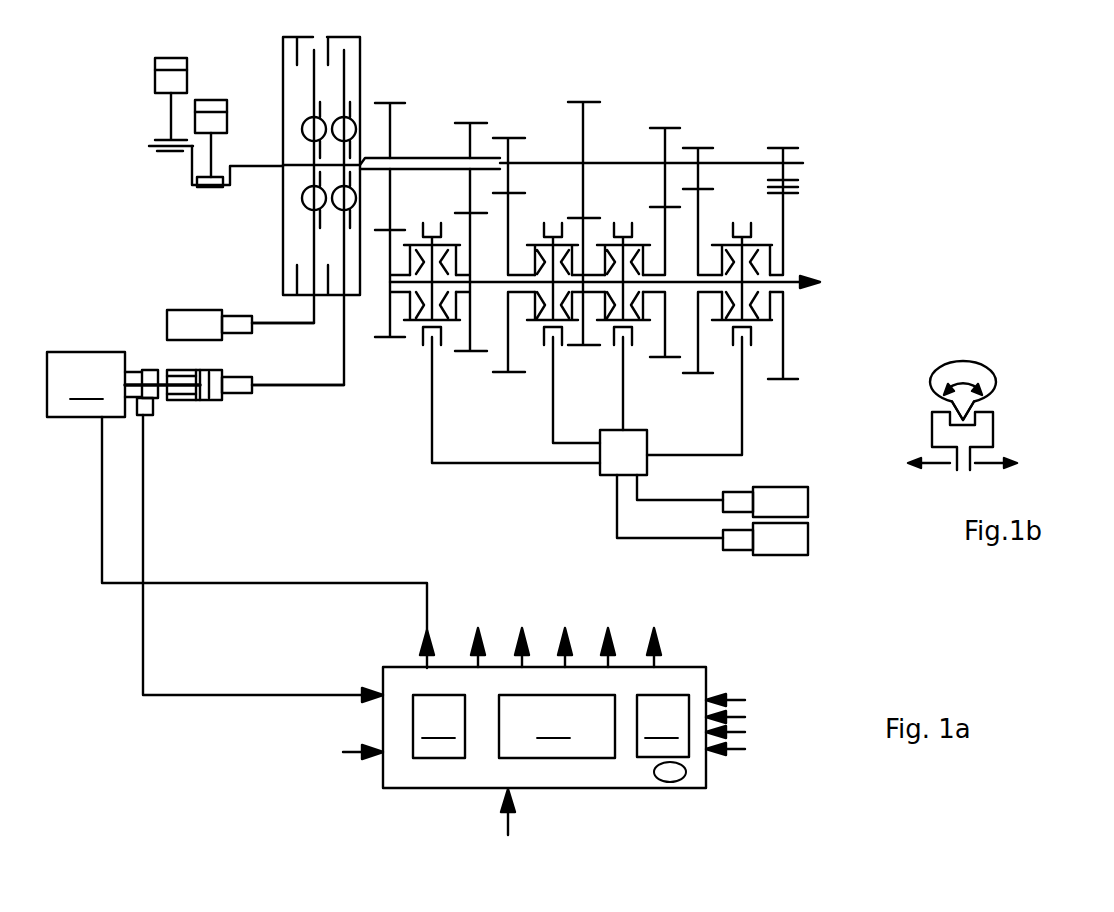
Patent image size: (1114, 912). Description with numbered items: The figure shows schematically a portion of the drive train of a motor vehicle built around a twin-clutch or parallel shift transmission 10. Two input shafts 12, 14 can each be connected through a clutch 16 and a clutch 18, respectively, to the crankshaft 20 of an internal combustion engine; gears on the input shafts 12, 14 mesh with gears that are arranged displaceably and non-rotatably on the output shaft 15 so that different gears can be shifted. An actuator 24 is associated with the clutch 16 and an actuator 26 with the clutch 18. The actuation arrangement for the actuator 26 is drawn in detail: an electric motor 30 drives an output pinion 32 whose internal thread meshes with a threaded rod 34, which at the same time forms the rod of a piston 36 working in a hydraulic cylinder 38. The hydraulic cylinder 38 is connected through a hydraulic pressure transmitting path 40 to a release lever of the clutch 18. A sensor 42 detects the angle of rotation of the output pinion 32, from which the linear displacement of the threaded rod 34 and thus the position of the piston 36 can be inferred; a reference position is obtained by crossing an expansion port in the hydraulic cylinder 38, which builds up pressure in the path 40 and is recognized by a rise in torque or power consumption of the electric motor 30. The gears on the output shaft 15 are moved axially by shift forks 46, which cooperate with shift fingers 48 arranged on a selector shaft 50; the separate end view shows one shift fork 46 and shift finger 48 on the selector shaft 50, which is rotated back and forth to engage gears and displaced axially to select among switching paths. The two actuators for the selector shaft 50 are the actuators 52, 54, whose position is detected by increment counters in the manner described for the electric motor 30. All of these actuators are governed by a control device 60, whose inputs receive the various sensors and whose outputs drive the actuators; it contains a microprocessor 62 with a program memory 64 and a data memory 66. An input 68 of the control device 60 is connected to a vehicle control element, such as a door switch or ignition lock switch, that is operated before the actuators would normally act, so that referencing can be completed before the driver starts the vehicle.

In FIG. 1a, the twin-clutch transmission 10 is at (641, 92).
In FIG. 1a, the first input shaft 12 is at (405, 156).
In FIG. 1a, the second input shaft 14 is at (732, 162).
In FIG. 1a, the output shaft 15 is at (758, 273).
In FIG. 1a, the first clutch 16 is at (300, 200).
In FIG. 1a, the second clutch 18 is at (337, 205).
In FIG. 1a, the crankshaft 20 is at (256, 166).
In FIG. 1a, the clutch actuator 24 is at (169, 311).
In FIG. 1a, the clutch actuator 26 is at (228, 422).
In FIG. 1a, the electric motor 30 is at (240, 527).
In FIG. 1a, the output pinion 32 is at (155, 371).
In FIG. 1a, the threaded rod 34 is at (160, 400).
In FIG. 1a, the piston 36 is at (200, 400).
In FIG. 1a, the hydraulic cylinder 38 is at (219, 370).
In FIG. 1a, the hydraulic pressure transmitting path 40 is at (322, 387).
In FIG. 1a, the sensor 42 is at (140, 412).
In FIG. 1b, the shift fork 46 is at (990, 433).
In FIG. 1b, the shift finger 48 is at (950, 408).
In FIG. 1b, the selector shaft 50 is at (993, 373).
In FIG. 1a, the selector shaft actuator 52 is at (808, 508).
In FIG. 1a, the selector shaft actuator 54 is at (808, 548).
In FIG. 1a, the control device 60 is at (706, 650).
In FIG. 1a, the microprocessor 62 is at (557, 726).
In FIG. 1a, the program memory 64 is at (663, 726).
In FIG. 1a, the data memory 66 is at (439, 726).
In FIG. 1a, the input 68 is at (508, 835).